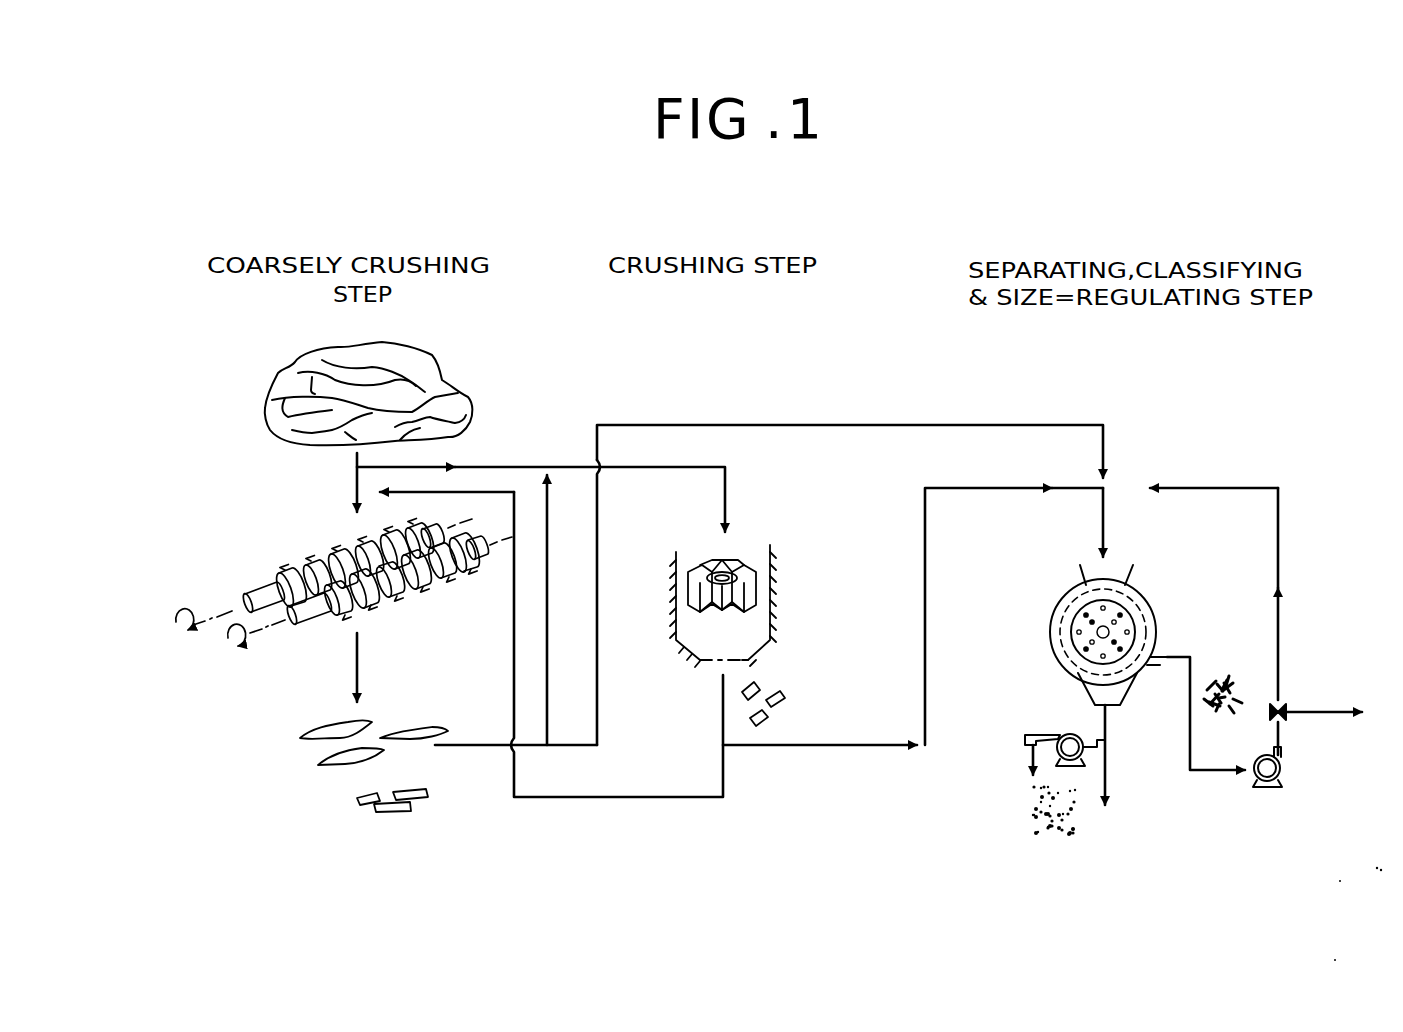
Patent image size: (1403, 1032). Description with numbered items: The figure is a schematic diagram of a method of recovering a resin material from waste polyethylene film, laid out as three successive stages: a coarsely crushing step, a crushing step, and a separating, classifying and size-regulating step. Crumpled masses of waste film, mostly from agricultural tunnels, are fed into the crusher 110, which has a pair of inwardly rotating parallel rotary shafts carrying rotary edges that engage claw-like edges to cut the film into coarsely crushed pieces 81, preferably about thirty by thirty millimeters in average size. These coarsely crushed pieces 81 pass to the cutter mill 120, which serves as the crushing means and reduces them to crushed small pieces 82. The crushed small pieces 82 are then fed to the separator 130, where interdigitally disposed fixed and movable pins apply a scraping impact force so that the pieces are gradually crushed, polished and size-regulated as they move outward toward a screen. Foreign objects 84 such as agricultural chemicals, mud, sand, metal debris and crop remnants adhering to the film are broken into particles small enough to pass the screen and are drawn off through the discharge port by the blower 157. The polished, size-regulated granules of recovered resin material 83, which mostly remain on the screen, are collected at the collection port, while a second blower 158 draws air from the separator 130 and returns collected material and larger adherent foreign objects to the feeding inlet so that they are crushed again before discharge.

The crusher 110 is at (219, 560).
The coarsely crushed pieces 81 is at (302, 732).
The cutter mill 120 is at (738, 540).
The crushed small pieces 82 is at (788, 697).
The separator 130 is at (1153, 582).
The recovered resin material 83 is at (1228, 665).
The blower 157 is at (1066, 733).
The foreign object 84 is at (1032, 806).
The blower 158 is at (1268, 790).